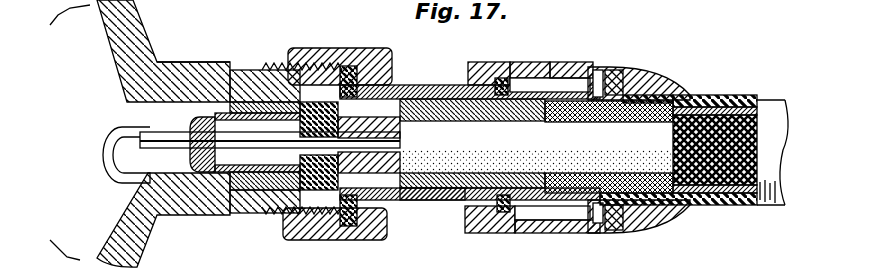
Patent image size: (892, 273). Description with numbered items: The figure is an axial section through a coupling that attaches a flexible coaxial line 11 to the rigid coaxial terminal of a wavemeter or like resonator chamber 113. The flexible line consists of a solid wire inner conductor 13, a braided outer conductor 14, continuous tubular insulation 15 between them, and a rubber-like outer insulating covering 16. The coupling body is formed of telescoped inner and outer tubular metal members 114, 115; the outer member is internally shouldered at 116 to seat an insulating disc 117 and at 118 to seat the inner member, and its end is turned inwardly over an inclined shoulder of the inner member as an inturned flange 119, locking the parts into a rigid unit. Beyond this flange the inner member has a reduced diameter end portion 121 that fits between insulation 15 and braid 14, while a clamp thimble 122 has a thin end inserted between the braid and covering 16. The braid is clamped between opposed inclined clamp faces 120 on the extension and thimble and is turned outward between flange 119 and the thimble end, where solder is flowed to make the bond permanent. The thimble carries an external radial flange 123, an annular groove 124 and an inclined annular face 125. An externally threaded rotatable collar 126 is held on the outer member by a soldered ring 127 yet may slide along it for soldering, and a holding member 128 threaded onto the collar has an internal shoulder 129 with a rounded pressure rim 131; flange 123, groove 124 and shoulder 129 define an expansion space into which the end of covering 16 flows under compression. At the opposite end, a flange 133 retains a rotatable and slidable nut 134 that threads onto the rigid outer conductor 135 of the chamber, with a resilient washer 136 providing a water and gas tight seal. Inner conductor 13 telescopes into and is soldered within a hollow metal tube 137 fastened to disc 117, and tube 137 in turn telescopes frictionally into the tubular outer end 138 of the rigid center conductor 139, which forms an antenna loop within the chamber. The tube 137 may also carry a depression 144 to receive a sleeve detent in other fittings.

The flexible coaxial conductor transmission line 11 is at (764, 208).
The inner conductor 13 is at (403, 138).
The outer conductor 14 is at (640, 122).
The tubular insulation 15 is at (403, 85).
The outer insulating covering 16 is at (755, 103).
The resonator chamber 113 is at (133, 24).
The inner tubular metal member 114 is at (462, 208).
The outer tubular metal member 115 is at (432, 200).
The internal shoulder 116 is at (267, 220).
The insulating disc 117 is at (287, 233).
The internal shoulder 118 is at (405, 203).
The inturned flange 119 is at (527, 220).
The inclined clamp face 120 is at (597, 124).
The reduced diameter end portion 121 is at (573, 121).
The clamp thimble 122 is at (737, 102).
The external radial flange 123 is at (623, 66).
The annular groove 124 is at (665, 88).
The inclined annular face 125 is at (682, 96).
The rotatable collar 126 is at (515, 63).
The ring 127 is at (469, 65).
The holding member 128 is at (560, 63).
The shoulder 129 is at (640, 72).
The rounded pressure rim 131 is at (620, 215).
The flange 133 is at (355, 60).
The nut 134 is at (382, 50).
The rigid outer conductor 135 is at (230, 62).
The resilient washer 136 is at (348, 232).
The hollow metal tube 137 is at (233, 217).
The tubular outer end 138 is at (250, 100).
The rigid center conductor 139 is at (103, 140).
The depression 144 is at (280, 62).